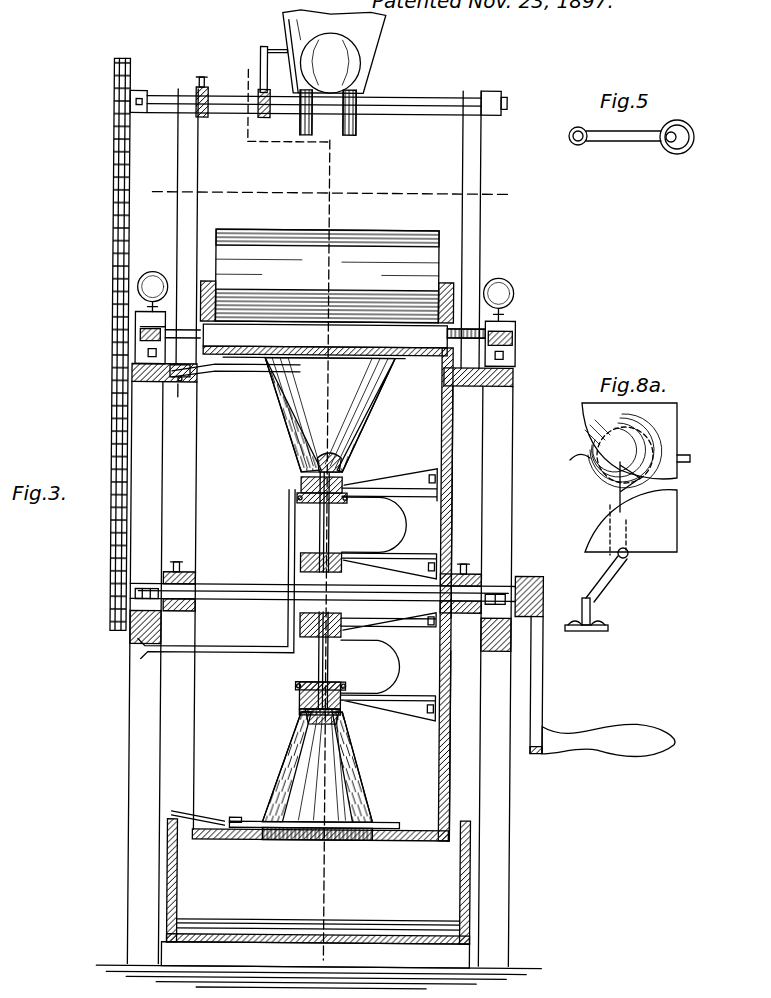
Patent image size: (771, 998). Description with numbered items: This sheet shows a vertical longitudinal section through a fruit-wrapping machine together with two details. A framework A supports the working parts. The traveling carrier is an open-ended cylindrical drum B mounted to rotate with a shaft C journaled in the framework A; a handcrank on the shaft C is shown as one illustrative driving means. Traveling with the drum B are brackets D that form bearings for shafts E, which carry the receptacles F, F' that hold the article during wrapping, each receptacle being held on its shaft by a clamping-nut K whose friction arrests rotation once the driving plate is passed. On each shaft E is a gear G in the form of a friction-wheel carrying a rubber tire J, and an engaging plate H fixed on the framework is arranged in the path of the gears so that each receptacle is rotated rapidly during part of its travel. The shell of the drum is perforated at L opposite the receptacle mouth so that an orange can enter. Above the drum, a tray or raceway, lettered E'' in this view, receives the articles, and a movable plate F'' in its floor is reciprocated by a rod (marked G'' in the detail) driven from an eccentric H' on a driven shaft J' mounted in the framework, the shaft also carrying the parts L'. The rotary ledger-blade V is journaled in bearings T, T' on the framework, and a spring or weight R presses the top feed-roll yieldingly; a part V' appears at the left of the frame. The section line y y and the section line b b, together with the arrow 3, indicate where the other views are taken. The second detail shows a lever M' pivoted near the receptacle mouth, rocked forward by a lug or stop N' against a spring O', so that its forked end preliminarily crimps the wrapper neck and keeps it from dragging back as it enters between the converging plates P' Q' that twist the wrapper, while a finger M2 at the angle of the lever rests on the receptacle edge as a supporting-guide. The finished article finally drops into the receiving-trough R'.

In FIG. 3, the framework A is at (131, 712).
In FIG. 3, the cylindrical drum B is at (452, 428).
In FIG. 3, the shaft C is at (221, 585).
In FIG. 3, the brackets D is at (394, 485).
In FIG. 3, the shafts E is at (342, 590).
In FIG. 3, the receptacles F is at (298, 766).
In FIG. 3, the upper cone F' is at (315, 414).
In FIG. 3, the movable plate F'' is at (595, 666).
In FIG. 3, the gear G is at (343, 595).
In FIG. 3, the connecting arm G'' is at (255, 60).
In FIG. 5, the connecting arm G'' is at (615, 158).
In FIG. 3, the engaging plate H is at (216, 574).
In FIG. 5, the eccentric H' is at (677, 155).
In FIG. 3, the rubber tire J is at (307, 577).
In FIG. 3, the driven shaft J' is at (314, 119).
In FIG. 3, the clamping-nut K is at (323, 604).
In FIG. 3, the perforation L is at (313, 856).
In FIG. 3, the disks L' is at (364, 84).
In FIG. 3, the lever M' is at (284, 596).
In FIG. 8a, the lever M' is at (565, 446).
In FIG. 8a, the finger M2 is at (591, 425).
In FIG. 3, the lug N' is at (186, 403).
In FIG. 8a, the lug N' is at (603, 593).
In FIG. 8a, the spring O' is at (611, 486).
In FIG. 8a, the converging plate P' is at (645, 441).
In FIG. 8a, the converging plate Q' is at (653, 521).
In FIG. 3, the spring or weight R is at (339, 285).
In FIG. 3, the receiving-trough R' is at (357, 882).
In FIG. 3, the bearings T is at (130, 338).
In FIG. 3, the bracket T' is at (497, 344).
In FIG. 3, the rotary ledger-blade V is at (327, 294).
In FIG. 3, the rack V' is at (85, 344).
In FIG. 3, the cup E'' is at (354, 52).
In FIG. 3, the section line y is at (299, 25).
In FIG. 3, the section line b is at (329, 195).
In FIG. 3, the section arrow 3 is at (259, 159).